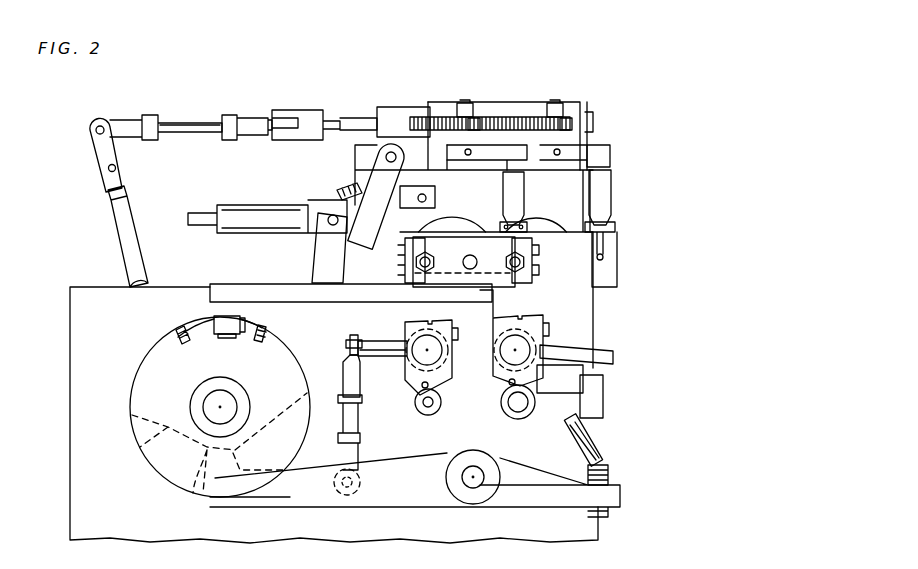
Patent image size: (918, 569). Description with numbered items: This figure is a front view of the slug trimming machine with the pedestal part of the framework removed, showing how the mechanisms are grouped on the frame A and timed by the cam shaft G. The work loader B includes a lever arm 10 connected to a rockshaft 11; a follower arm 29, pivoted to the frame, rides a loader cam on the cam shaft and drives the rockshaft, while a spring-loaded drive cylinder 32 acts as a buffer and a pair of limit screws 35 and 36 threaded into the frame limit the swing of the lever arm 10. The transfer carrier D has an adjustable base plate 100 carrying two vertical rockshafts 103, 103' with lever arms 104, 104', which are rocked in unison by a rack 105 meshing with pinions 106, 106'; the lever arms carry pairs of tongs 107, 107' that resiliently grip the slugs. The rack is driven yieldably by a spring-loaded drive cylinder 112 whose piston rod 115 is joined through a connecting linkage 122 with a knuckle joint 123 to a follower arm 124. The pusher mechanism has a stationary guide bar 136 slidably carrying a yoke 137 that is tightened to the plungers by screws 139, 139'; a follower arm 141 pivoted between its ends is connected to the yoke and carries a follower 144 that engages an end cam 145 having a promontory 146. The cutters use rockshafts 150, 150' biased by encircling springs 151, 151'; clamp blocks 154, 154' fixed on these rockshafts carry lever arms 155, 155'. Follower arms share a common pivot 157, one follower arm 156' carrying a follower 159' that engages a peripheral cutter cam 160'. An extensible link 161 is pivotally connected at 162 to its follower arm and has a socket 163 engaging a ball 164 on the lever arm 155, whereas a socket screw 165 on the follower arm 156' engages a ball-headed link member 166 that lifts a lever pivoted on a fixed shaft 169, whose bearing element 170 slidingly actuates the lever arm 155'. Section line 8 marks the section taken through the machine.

The section line 8- 8 is at (78, 320).
The lever arm 10 is at (378, 168).
The rockshaft 11 is at (393, 150).
The follower arm 29 is at (318, 262).
The spring-loaded drive cylinder 32 is at (252, 210).
The limit screw 35 is at (338, 195).
The limit screw 36 is at (427, 201).
The base plate 100 is at (583, 104).
The rockshaft 103 is at (479, 98).
The rockshaft 103' is at (563, 95).
The lever arm 104 is at (489, 148).
The lever arm 104' is at (593, 143).
The rack 105 is at (415, 117).
The pinion 106 is at (499, 109).
The pinion 106' is at (591, 101).
The tongs 107 is at (533, 202).
The tongs 107' is at (623, 228).
The spring-loaded drive cylinder 112 is at (384, 108).
The piston rod 115 is at (341, 118).
The connecting linkage 122 is at (172, 124).
The knuckle joint 123 is at (273, 112).
The follower arm 124 is at (113, 235).
The stationary guide bar 136 is at (476, 268).
The yoke 137 is at (466, 262).
The screw 139 is at (401, 260).
The screw 139' is at (548, 260).
The follower arm 141 is at (224, 296).
The follower 144 is at (214, 323).
The end cam 145 is at (150, 366).
The promontory 146 is at (178, 330).
The rockshaft 150 is at (408, 354).
The rockshaft 150' is at (547, 343).
The spring 151 is at (405, 397).
The spring 151' is at (501, 382).
The clamp block 154 is at (449, 357).
The clamp block 154' is at (538, 337).
The lever arm 155 is at (382, 337).
The lever arm 155' is at (596, 336).
The follower arm 156' is at (442, 485).
The common pivot 157 is at (471, 480).
The follower 159' is at (218, 498).
The peripheral cutter cam 160' is at (201, 443).
The extensible link 161 is at (358, 425).
The pivotal connection 162 is at (350, 480).
The socket 163 is at (355, 360).
The ball 164 is at (348, 343).
The socket screw 165 is at (610, 475).
The link member 166 is at (600, 458).
The fixed shaft 169 is at (512, 406).
The bearing element 170 is at (600, 376).
The frame A is at (70, 393).
The work loader B is at (366, 186).
The transfer carrier D is at (441, 114).
The cam shaft G is at (206, 404).